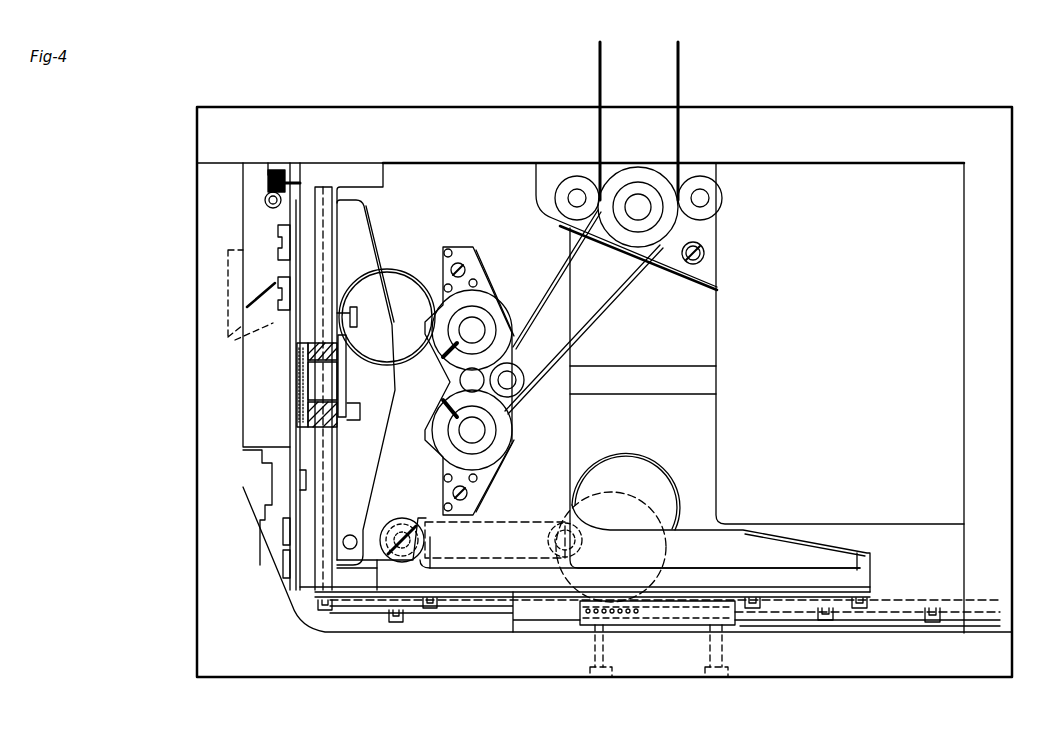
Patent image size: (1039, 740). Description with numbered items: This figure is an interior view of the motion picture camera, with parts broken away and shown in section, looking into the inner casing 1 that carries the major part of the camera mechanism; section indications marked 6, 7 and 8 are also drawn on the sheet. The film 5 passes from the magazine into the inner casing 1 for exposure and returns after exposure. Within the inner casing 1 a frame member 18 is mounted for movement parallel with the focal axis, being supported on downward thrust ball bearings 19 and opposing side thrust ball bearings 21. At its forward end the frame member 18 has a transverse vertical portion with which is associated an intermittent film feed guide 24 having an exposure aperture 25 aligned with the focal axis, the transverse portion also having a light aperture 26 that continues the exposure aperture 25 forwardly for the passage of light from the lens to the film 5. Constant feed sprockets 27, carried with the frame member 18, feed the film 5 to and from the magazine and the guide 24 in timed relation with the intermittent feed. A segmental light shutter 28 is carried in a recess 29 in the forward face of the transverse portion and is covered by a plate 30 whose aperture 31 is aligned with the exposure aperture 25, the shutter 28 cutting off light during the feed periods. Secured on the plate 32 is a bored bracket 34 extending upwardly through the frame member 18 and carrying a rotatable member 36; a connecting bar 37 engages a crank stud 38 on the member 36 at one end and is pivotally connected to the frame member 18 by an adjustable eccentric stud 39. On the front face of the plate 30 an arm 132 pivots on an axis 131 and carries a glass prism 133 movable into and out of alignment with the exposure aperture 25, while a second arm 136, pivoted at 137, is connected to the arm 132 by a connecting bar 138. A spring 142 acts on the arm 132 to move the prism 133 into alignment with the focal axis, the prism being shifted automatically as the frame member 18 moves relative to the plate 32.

The inner casing 1 is at (982, 112).
The film 5 is at (1037, 610).
The section line 6 is at (1038, 506).
The section line 7 is at (270, 722).
The section line 8 is at (526, 148).
The frame member 18 is at (572, 443).
The downward thrust ball bearings 19 is at (425, 612).
The opposing side thrust ball bearings 21 is at (640, 625).
The intermittent film feed guide 24 is at (360, 340).
The exposure aperture 25 is at (330, 396).
The light aperture 26 is at (312, 396).
The constant feed sprockets 27 is at (505, 340).
The segmental light shutter 28 is at (302, 352).
The recess 29 is at (305, 426).
The plate 30 is at (304, 480).
The aperture 31 is at (300, 372).
The plate 32 is at (790, 627).
The bored bracket 34 is at (655, 492).
The member 36 is at (660, 522).
The connecting bar 37 is at (513, 522).
The crank stud 38 is at (552, 541).
The adjustable eccentric stud 39 is at (418, 538).
The pivotal axis 131 is at (280, 237).
The arm 132 is at (288, 218).
The glass prism 133 is at (258, 300).
The second arm 136 is at (290, 558).
The pivotal mounting 137 is at (285, 530).
The connecting bar 138 is at (300, 490).
The spring 142 is at (282, 174).